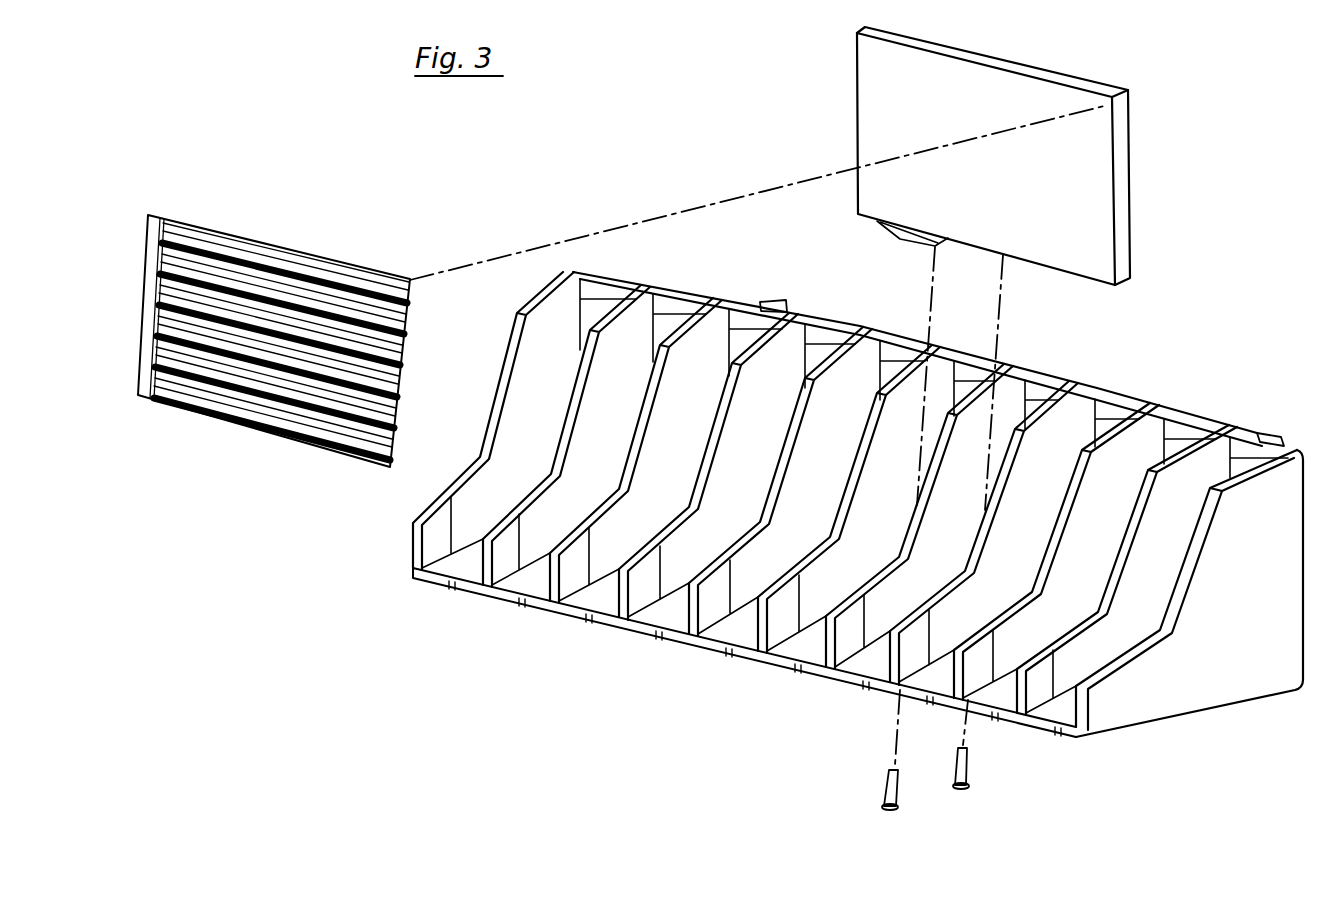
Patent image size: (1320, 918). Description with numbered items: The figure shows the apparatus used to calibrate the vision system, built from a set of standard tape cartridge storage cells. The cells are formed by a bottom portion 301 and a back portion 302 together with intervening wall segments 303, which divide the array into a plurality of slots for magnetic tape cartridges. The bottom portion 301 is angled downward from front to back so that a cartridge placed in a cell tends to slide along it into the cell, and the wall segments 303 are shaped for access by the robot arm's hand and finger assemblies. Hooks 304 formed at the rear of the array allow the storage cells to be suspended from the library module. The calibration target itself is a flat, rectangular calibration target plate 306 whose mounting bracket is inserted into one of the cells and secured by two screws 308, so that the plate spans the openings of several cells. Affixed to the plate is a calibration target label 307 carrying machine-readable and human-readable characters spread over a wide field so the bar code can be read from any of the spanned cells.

The bottom portion 301 is at (462, 560).
The back portion 302 is at (677, 303).
The wall segments 303 is at (507, 355).
The hooks 304 is at (788, 302).
The calibration target plate 306 is at (928, 111).
The calibration target label 307 is at (288, 245).
The screws 308 is at (957, 787).